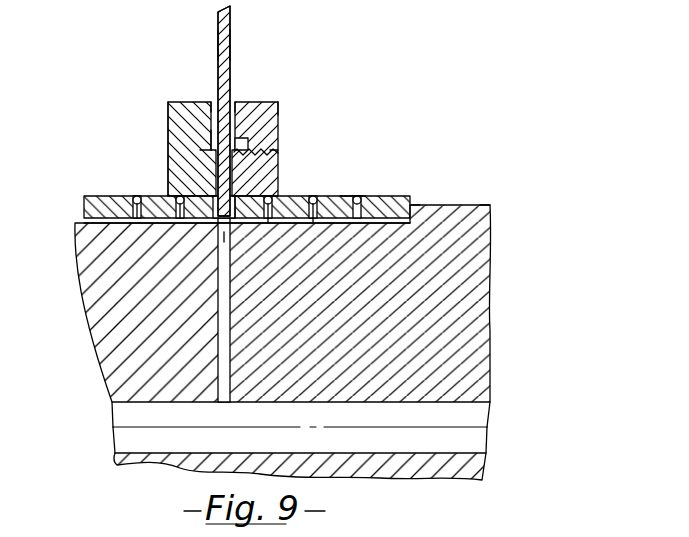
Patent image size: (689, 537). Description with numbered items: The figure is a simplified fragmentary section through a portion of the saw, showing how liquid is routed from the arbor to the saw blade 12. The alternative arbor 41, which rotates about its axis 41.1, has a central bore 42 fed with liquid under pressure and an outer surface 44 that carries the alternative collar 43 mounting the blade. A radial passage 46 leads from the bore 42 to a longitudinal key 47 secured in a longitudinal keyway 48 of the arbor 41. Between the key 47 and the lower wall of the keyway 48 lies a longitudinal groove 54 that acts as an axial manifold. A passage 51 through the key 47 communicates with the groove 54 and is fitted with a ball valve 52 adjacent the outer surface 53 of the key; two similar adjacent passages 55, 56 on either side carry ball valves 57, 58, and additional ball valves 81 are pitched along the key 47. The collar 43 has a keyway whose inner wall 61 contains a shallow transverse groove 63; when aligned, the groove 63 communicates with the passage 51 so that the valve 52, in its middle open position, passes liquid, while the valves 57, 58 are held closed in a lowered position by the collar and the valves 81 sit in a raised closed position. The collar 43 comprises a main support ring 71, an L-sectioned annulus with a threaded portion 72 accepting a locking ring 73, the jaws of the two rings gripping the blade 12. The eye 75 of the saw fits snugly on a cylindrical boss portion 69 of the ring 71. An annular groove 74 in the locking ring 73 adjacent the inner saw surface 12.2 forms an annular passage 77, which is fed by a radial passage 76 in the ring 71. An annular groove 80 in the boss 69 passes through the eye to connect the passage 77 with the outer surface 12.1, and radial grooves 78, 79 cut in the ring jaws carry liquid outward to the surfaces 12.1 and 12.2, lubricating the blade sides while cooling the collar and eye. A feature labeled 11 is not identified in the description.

The gap / clearance 11 is at (250, 181).
The saw blade 12 is at (218, 27).
The saw blade surface 12.1 is at (218, 47).
The saw blade surface 12.2 is at (231, 45).
The arbor 41 is at (104, 352).
The axis 41.1 is at (96, 430).
The central bore 42 is at (118, 412).
The collar 43 is at (204, 132).
The outer surface 44 is at (492, 204).
The radial passage 46 is at (218, 294).
The longitudinal key 47 is at (347, 191).
The longitudinal keyway 48 is at (412, 206).
The passage 51 is at (230, 220).
The ball valve 52 is at (223, 199).
The outer surface 53 is at (406, 194).
The longitudinal groove 54 is at (322, 222).
The adjacent passage 55 is at (178, 223).
The adjacent passage 56 is at (270, 220).
The ball valve 57 is at (176, 196).
The ball valve 58 is at (296, 198).
The inner wall 61 is at (272, 190).
The transverse groove 63 is at (257, 211).
The cylindrical boss portion 69 is at (210, 121).
The main support ring 71 is at (172, 108).
The threaded portion 72 is at (272, 151).
The locking ring 73 is at (280, 103).
The annular groove 74 is at (249, 148).
The eye 75 is at (211, 148).
The radial passage 76 is at (214, 160).
The annular passage 77 is at (255, 149).
The radial groove 78 is at (213, 105).
The radial groove 79 is at (240, 104).
The annular groove 80 is at (240, 156).
The additional ball valves 81 is at (110, 196).